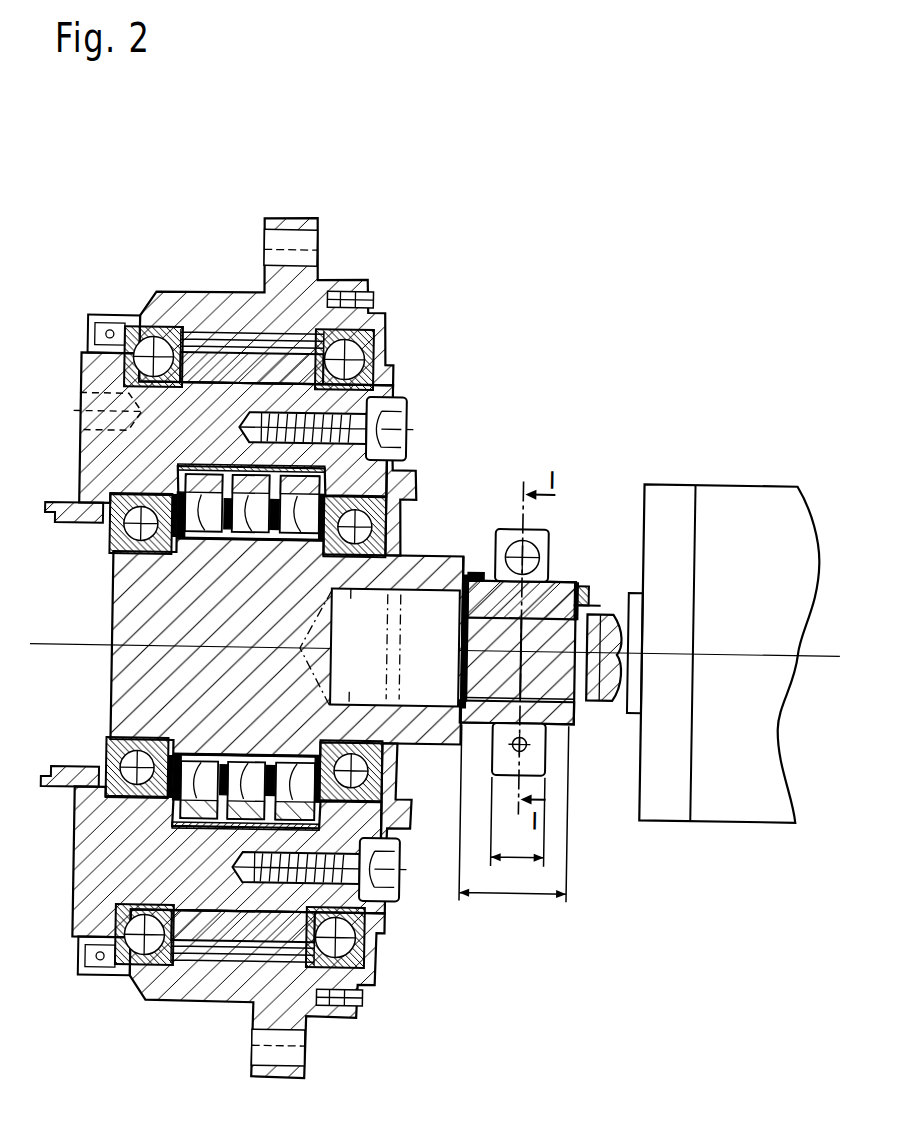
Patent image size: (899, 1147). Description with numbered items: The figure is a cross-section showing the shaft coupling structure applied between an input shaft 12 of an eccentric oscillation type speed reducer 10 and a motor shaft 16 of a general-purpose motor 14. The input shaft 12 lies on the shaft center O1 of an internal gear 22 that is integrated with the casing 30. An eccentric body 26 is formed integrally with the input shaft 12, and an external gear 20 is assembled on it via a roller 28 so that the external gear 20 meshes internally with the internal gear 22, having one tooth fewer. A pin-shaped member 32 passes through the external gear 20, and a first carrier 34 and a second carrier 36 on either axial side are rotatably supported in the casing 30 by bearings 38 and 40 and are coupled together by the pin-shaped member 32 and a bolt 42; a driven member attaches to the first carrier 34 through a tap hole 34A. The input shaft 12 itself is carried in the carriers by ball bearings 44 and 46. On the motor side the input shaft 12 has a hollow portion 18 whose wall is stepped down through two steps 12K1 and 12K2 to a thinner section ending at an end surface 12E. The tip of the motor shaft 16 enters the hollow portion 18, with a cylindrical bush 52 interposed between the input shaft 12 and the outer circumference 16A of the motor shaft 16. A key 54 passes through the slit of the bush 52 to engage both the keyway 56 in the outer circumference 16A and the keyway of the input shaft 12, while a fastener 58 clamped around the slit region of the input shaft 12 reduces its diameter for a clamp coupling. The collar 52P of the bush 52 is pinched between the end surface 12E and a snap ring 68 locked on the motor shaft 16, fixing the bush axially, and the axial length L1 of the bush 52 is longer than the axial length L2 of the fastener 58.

The speed reducer 10 is at (420, 208).
The input shaft 12 is at (400, 578).
The end surface 12E is at (589, 583).
The step 12K1 is at (466, 574).
The step 12K2 is at (488, 572).
The motor 14 is at (732, 503).
The motor shaft 16 is at (608, 612).
The outer circumference 16A is at (578, 712).
The hollow portion 18 is at (446, 638).
The external gear 20 is at (258, 485).
The internal gear 22 is at (243, 326).
The eccentric body 26 is at (266, 802).
The roller 28 is at (285, 824).
The casing 30 is at (188, 292).
The pin-shaped member 32 is at (330, 404).
The first carrier 34 is at (110, 458).
The tap hole 34A is at (92, 421).
The second carrier 36 is at (392, 474).
The bearing 38 is at (142, 350).
The bearing 40 is at (362, 355).
The bolt 42 is at (385, 405).
The ball bearing 44 is at (105, 800).
The ball bearing 46 is at (372, 769).
The bush 52 is at (480, 714).
The collar 52P is at (574, 722).
The key 54 is at (503, 606).
The keyway 56 is at (524, 648).
The fastener 58 is at (540, 526).
The snap ring 68 is at (599, 622).
The shaft center O1 is at (52, 650).
The axial length of the bush L1 is at (514, 814).
The axial length of the fastener L2 is at (518, 822).